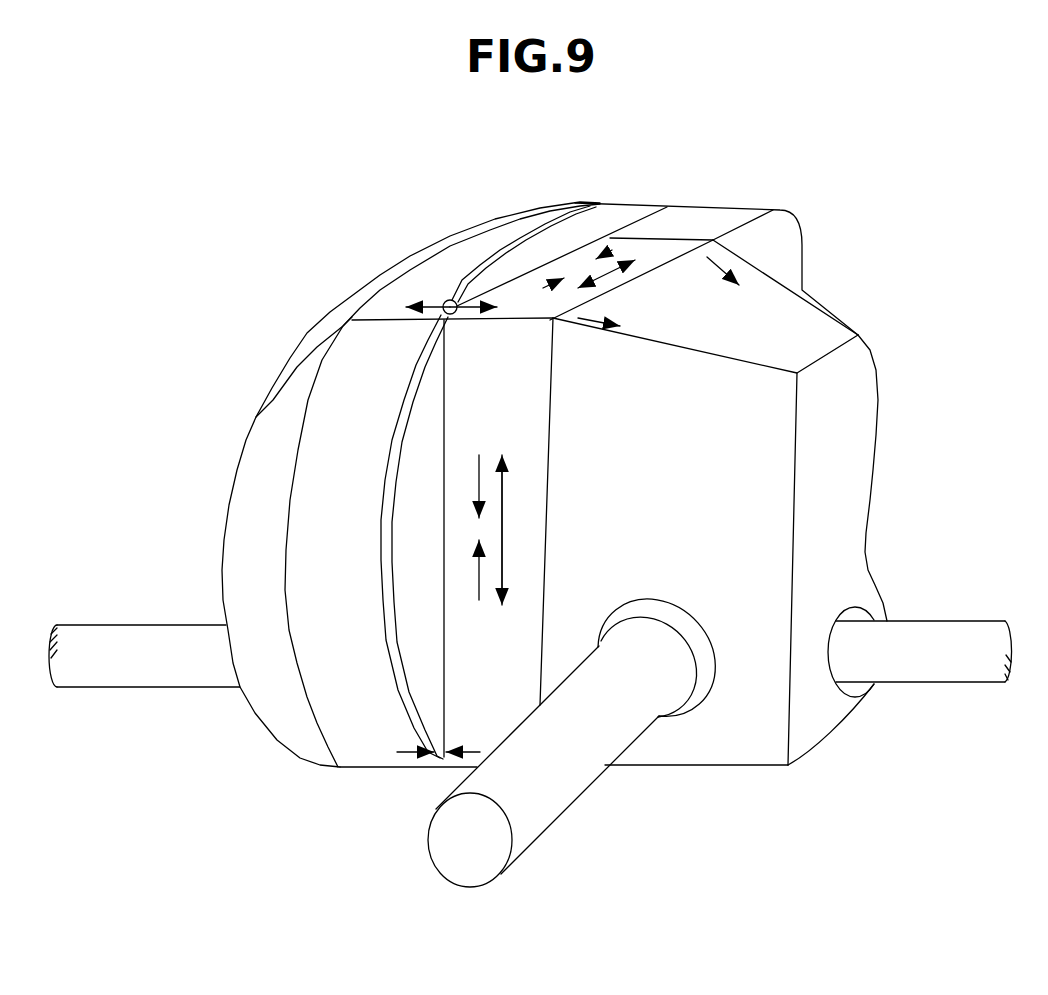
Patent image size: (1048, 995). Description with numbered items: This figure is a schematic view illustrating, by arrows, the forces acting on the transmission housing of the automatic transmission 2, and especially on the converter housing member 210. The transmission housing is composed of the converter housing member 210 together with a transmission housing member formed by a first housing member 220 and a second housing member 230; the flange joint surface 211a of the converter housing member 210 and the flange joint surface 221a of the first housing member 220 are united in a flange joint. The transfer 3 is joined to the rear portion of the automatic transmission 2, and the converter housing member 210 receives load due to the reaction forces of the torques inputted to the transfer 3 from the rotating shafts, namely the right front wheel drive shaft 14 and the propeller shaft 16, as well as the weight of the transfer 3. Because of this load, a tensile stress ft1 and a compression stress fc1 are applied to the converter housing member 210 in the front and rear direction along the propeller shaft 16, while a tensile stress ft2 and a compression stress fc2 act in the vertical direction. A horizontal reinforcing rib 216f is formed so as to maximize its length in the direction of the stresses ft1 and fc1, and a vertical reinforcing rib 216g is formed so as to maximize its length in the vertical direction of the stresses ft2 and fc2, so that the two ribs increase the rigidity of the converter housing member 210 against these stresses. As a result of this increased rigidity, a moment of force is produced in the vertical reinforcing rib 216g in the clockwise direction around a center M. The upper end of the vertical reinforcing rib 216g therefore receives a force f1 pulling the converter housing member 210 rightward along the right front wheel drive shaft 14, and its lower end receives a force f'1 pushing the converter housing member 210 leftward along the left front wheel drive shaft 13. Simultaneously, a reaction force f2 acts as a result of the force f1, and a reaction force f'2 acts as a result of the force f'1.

The automatic transmission 2 is at (300, 328).
The transfer 3 is at (890, 431).
The left front wheel drive shaft 13 is at (133, 640).
The right front wheel drive shaft 14 is at (935, 637).
The propeller shaft 16 is at (557, 790).
The converter housing member 210 is at (733, 209).
The flange joint surface 211a is at (395, 650).
The horizontal reinforcing rib 216f is at (668, 239).
The vertical reinforcing rib 216g is at (488, 697).
The first housing member 220 is at (492, 237).
The flange joint surface 221a is at (388, 630).
The second housing member 230 is at (307, 380).
The force f1 is at (483, 307).
The reaction force f2 is at (413, 307).
The force f'1 is at (436, 799).
The reaction force f'2 is at (389, 789).
The compression stress fc1 is at (613, 252).
The compression stress fc2 is at (478, 480).
The tensile stress ft1 is at (602, 278).
The tensile stress ft2 is at (502, 490).
The center M is at (490, 527).